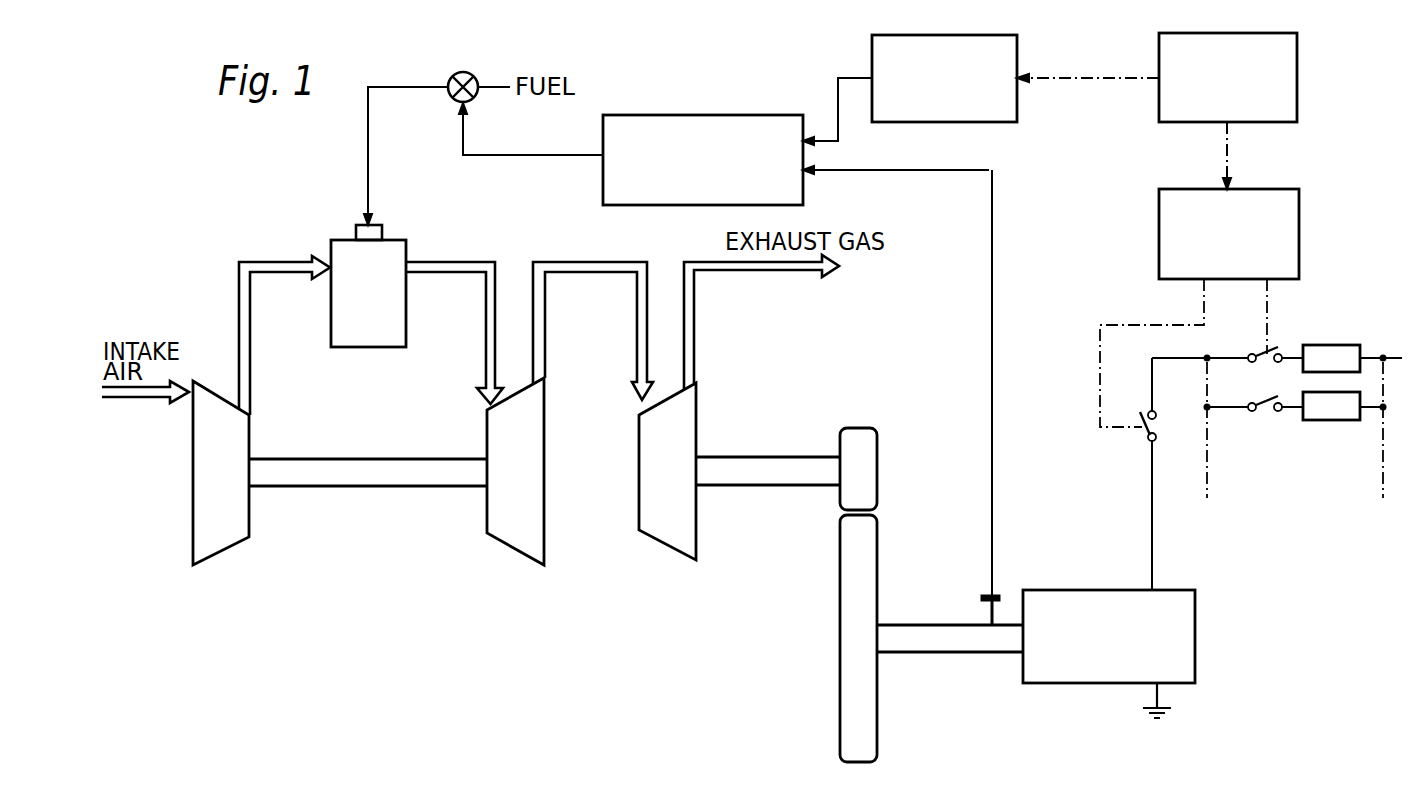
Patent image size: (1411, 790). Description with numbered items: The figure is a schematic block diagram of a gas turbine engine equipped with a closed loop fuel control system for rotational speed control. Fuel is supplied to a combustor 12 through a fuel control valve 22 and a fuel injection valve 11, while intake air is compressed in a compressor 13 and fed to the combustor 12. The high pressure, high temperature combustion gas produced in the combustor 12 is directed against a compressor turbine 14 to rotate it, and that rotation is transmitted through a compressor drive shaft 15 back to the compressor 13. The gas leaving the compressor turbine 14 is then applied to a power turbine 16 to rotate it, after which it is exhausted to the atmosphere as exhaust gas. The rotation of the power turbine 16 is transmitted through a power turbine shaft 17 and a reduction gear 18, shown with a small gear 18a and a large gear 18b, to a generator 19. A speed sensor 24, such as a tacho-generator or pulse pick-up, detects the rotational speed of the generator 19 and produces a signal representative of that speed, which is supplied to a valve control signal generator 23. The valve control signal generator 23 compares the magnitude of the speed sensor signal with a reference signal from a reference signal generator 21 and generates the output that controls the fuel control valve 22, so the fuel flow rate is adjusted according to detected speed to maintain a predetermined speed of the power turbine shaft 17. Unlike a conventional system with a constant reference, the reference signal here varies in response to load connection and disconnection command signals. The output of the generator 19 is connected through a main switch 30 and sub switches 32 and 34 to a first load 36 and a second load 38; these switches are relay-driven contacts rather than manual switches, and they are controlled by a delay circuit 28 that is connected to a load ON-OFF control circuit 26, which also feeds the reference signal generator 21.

The fuel injection valve 11 is at (382, 226).
The combustor 12 is at (362, 348).
The compressor 13 is at (212, 560).
The compressor turbine 14 is at (520, 550).
The compressor drive shaft 15 is at (303, 488).
The power turbine 16 is at (662, 543).
The power turbine shaft 17 is at (713, 457).
The reduction gear 18 is at (790, 595).
The small gear 18a is at (878, 460).
The large gear 18b is at (837, 568).
The generator 19 is at (1195, 612).
The reference signal generator 21 is at (1017, 53).
The fuel control valve 22 is at (463, 72).
The valve control signal generator 23 is at (692, 115).
The speed sensor 24 is at (996, 595).
The load ON-OFF control circuit 26 is at (1314, 70).
The delay circuit 28 is at (1265, 189).
The main switch 30 is at (1145, 433).
The sub switch 32 is at (1260, 350).
The sub switch 34 is at (1269, 407).
The first load 36 is at (1320, 345).
The second load 38 is at (1330, 420).